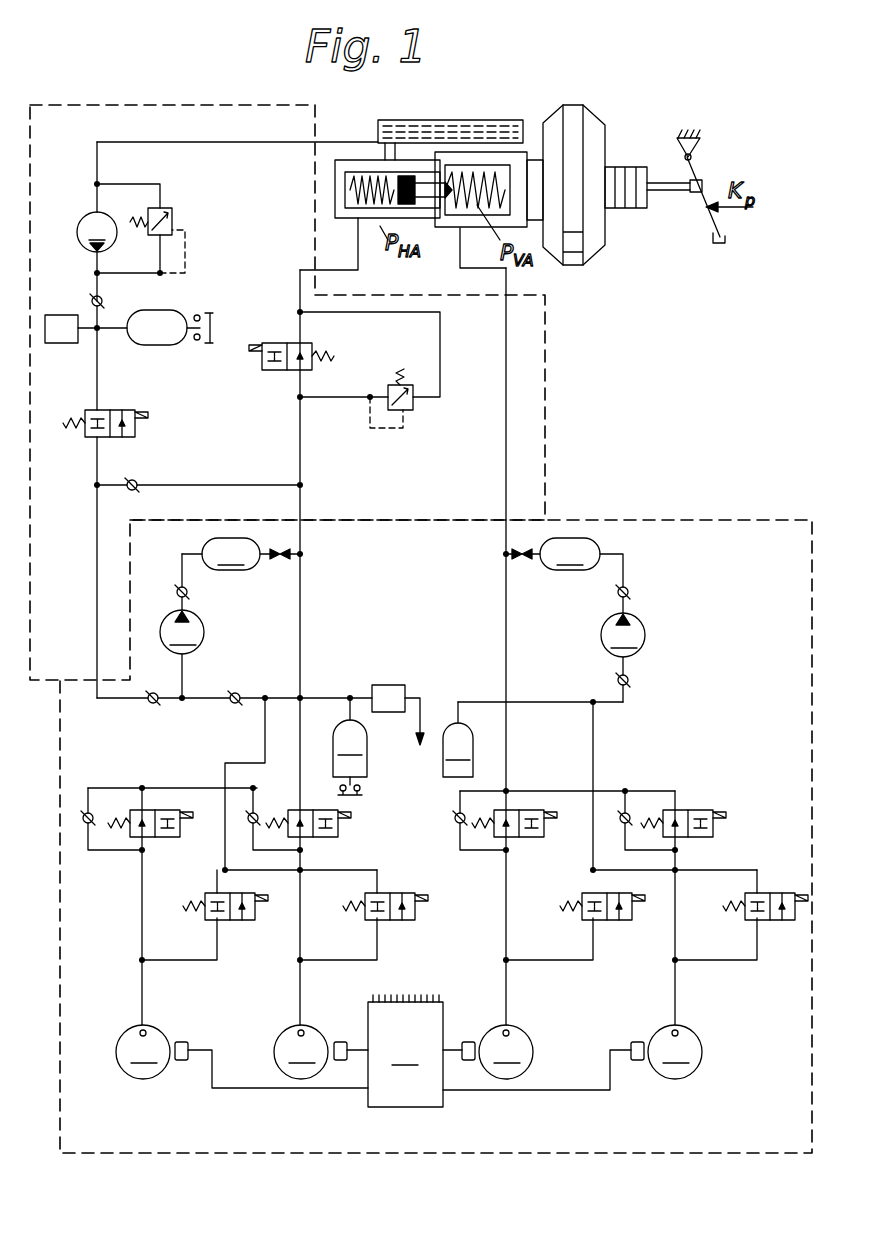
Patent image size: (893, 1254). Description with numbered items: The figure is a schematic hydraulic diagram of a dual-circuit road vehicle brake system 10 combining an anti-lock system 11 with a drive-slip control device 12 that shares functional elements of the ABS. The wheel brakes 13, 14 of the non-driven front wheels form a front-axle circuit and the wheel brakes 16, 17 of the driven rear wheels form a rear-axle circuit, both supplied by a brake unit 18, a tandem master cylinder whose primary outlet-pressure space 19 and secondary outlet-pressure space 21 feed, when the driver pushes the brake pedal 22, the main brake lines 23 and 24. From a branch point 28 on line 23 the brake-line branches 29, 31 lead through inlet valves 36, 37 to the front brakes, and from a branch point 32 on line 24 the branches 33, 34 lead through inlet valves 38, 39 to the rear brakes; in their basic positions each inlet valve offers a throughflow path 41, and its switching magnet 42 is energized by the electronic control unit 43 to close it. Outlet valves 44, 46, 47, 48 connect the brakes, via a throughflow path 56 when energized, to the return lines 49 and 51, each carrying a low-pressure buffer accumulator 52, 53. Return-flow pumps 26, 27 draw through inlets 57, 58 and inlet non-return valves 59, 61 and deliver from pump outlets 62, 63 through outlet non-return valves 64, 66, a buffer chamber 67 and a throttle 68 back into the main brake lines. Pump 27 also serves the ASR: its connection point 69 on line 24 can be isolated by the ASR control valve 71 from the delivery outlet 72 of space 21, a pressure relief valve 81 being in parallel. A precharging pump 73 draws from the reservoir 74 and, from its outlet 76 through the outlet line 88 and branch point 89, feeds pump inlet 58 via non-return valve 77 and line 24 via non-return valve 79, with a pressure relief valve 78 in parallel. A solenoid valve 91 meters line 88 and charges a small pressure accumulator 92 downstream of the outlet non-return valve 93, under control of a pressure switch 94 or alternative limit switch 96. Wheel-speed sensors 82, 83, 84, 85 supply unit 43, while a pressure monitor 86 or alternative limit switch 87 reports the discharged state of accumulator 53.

The hydraulic dual-circuit brake system 10 is at (640, 492).
The anti-lock system 11 is at (607, 523).
The drive-slip control device 12 is at (518, 415).
The wheel brake 13 is at (506, 1052).
The wheel brake 14 is at (675, 1052).
The wheel brake 16 is at (143, 1052).
The wheel brake 17 is at (301, 1052).
The brake unit 18 is at (468, 228).
The primary outlet-pressure space 19 is at (445, 228).
The secondary outlet-pressure space 21 is at (358, 165).
The brake pedal 22 is at (706, 222).
The main brake line 23 is at (503, 462).
The main brake line 24 is at (300, 475).
The return-flow pump 26 is at (623, 657).
The return-flow pump 27 is at (182, 654).
The branch point 28 is at (507, 798).
The brake-line branch 29 is at (505, 803).
The brake-line branch 31 is at (675, 805).
The branch point 32 is at (299, 785).
The brake-line branch 33 is at (148, 810).
The brake-line branch 34 is at (303, 805).
The inlet valve 36 is at (535, 830).
The inlet valve 37 is at (712, 828).
The inlet valve 38 is at (162, 838).
The inlet valve 39 is at (330, 825).
The throughflow path 41 is at (135, 847).
The switching magnet 42 is at (184, 817).
The electronic control unit 43 is at (405, 1051).
The outlet valve 44 is at (608, 920).
The outlet valve 46 is at (772, 920).
The outlet valve 47 is at (233, 920).
The outlet valve 48 is at (393, 920).
The return line 49 is at (598, 770).
The return line 51 is at (265, 742).
The buffer accumulator 52 is at (458, 739).
The buffer accumulator 53 is at (350, 737).
The throughflow path 56 is at (630, 913).
The inlet 57 is at (630, 660).
The inlet 58 is at (185, 695).
The inlet non-return valve 59 is at (615, 677).
The inlet non-return valve 61 is at (238, 690).
The pump outlet 62 is at (640, 612).
The pump outlet 63 is at (190, 605).
The outlet non-return valve 64 is at (628, 588).
The outlet non-return valve 66 is at (178, 587).
The buffer chamber 67 is at (401, 554).
The throttle 68 is at (280, 562).
The connection point 69 is at (305, 554).
The ASR control valve 71 is at (268, 372).
The delivery outlet 72 is at (363, 220).
The precharging pump 73 is at (93, 215).
The reservoir 74 is at (475, 128).
The outlet 76 is at (97, 272).
The non-return valve 77 is at (150, 705).
The pressure relief valve 78 is at (168, 208).
The non-return valve 79 is at (140, 482).
The pressure relief valve 81 is at (400, 385).
The wheel-speed sensor 82 is at (468, 1062).
The wheel-speed sensor 83 is at (637, 1062).
The wheel-speed sensor 84 is at (340, 1062).
The wheel-speed sensor 85 is at (181, 1062).
The pressure monitor 86 is at (393, 690).
The limit switch 87 is at (365, 790).
The outlet line 88 is at (97, 383).
The branch point 89 is at (97, 490).
The 2/2-way solenoid valve 91 is at (113, 414).
The pressure accumulator 92 is at (185, 314).
The outlet non-return valve 93 is at (105, 300).
The pressure switch 94 is at (50, 314).
The limit switch 96 is at (197, 342).